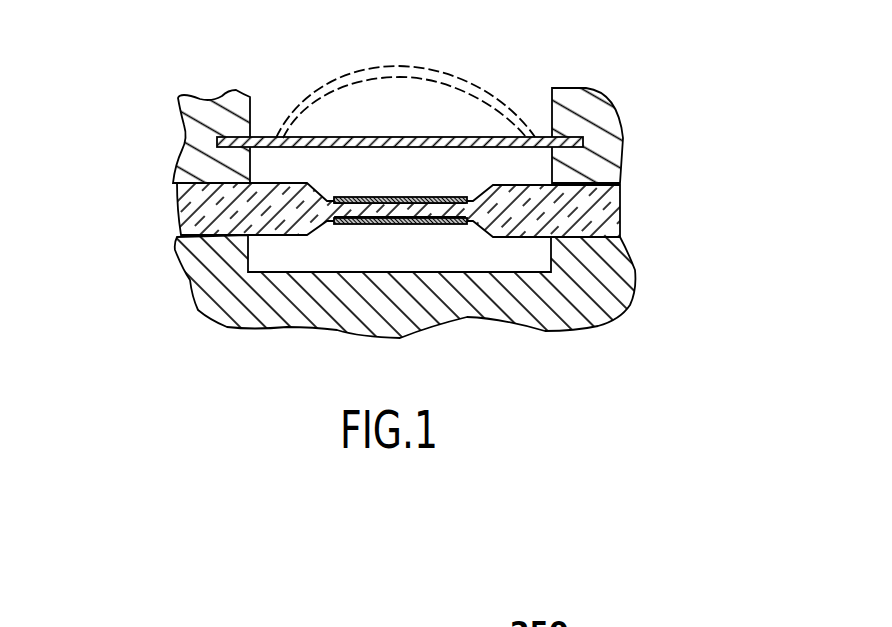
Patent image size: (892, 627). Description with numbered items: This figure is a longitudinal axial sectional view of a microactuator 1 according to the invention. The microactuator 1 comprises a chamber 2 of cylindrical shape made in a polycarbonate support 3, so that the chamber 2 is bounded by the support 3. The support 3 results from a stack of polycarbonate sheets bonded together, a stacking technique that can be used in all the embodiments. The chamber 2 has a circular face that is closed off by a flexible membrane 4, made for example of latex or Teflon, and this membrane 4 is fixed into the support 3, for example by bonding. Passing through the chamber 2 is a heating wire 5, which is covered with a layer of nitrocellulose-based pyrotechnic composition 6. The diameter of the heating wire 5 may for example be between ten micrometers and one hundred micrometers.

The microactuator 1 is at (428, 202).
The chamber 2 is at (475, 176).
The polycarbonate support 3 is at (603, 301).
The flexible membrane 4 is at (395, 137).
The heating wire 5 is at (366, 225).
The layer of nitrocellulose-based pyrotechnic composition 6 is at (423, 225).